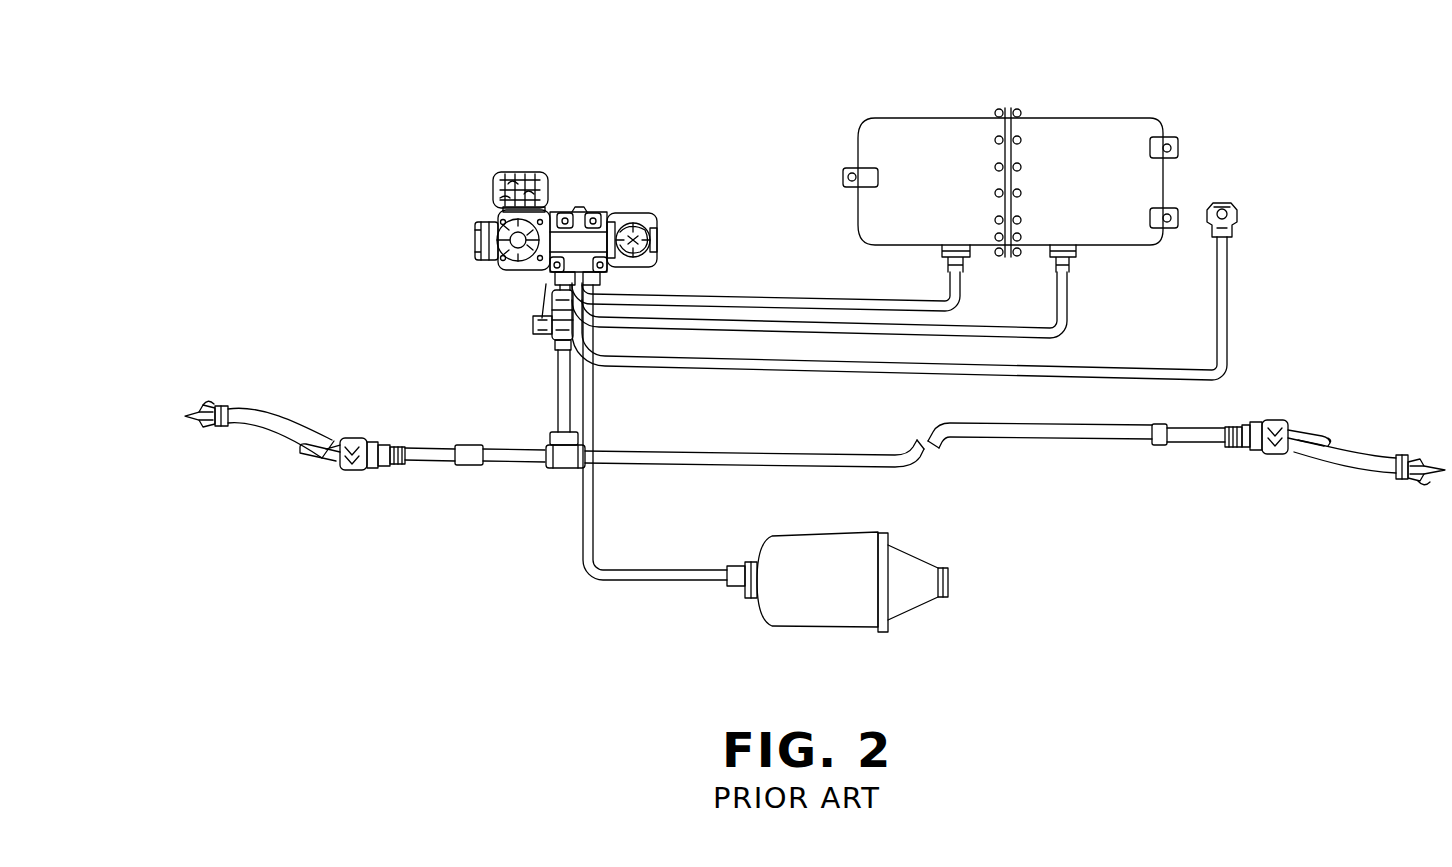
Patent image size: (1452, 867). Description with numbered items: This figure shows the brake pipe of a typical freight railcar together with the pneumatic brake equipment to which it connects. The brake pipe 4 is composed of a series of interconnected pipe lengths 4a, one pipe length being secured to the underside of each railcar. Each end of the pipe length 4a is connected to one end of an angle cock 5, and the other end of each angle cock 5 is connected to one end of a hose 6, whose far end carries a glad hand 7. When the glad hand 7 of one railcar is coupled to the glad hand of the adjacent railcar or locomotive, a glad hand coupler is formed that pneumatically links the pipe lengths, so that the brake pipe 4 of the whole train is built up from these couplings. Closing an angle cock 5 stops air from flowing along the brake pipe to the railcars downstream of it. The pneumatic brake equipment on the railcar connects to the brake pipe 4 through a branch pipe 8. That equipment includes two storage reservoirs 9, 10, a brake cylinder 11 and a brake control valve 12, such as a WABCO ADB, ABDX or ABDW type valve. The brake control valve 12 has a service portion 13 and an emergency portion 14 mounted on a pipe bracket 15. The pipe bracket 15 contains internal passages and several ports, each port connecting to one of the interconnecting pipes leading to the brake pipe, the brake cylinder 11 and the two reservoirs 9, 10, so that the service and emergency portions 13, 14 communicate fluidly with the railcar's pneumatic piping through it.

The brake pipe 4 is at (190, 398).
The pipe length 4a is at (1057, 437).
The angle cock 5 is at (352, 437).
The hose 6 is at (290, 431).
The glad hand 7 is at (208, 427).
The branch pipe 8 is at (556, 386).
The storage reservoir 9 is at (1124, 240).
The storage reservoir 10 is at (872, 150).
The brake cylinder 11 is at (915, 598).
The brake control valve 12 is at (503, 140).
The service portion 13 is at (492, 220).
The emergency portion 14 is at (652, 222).
The pipe bracket 15 is at (582, 207).